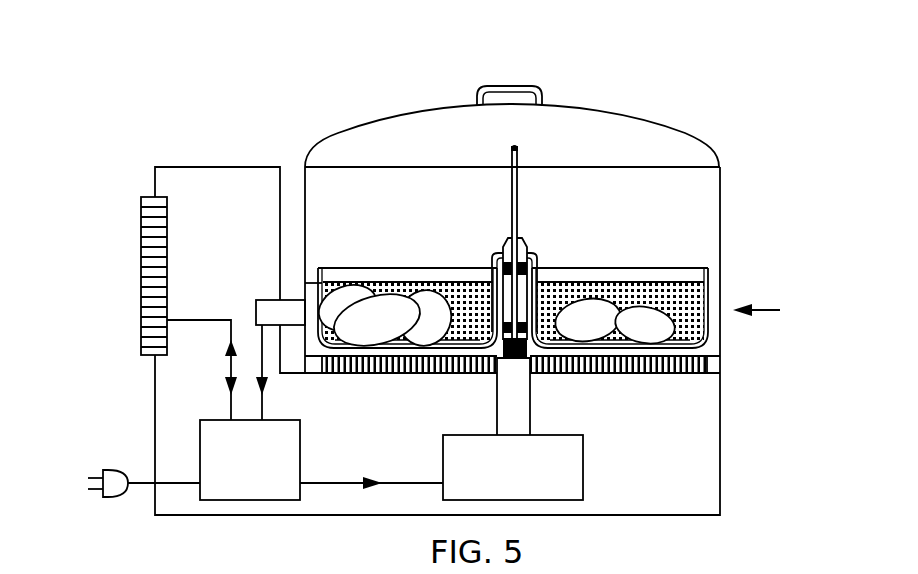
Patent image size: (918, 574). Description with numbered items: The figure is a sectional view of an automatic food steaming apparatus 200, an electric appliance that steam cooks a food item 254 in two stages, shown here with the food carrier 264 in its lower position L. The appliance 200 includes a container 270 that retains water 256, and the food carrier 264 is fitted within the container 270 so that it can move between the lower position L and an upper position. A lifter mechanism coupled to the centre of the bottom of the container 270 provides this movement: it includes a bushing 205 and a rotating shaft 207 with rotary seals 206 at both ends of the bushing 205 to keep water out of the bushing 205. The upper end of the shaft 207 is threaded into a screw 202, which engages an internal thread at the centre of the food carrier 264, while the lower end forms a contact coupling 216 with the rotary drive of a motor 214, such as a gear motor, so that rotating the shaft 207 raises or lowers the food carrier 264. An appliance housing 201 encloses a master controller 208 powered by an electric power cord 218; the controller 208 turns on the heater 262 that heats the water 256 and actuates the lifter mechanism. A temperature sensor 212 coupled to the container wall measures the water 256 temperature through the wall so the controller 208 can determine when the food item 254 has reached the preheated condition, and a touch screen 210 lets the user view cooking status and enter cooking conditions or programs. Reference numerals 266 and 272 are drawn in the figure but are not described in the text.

The automatic food steaming apparatus 200 is at (592, 79).
The appliance housing 201 is at (722, 462).
The screw 202 is at (520, 213).
The bushing 205 is at (466, 288).
The rotary seals 206 is at (500, 257).
The rotating shaft 207 is at (520, 172).
The master controller 208 is at (285, 473).
The touch screen 210 is at (140, 283).
The temperature sensor 212 is at (276, 312).
The motor 214 is at (540, 477).
The contact coupling 216 is at (503, 352).
The electric power cord 218 is at (143, 487).
The food item 254 is at (591, 316).
The water 256 is at (712, 296).
The heater 262 is at (708, 364).
The food carrier 264 is at (706, 276).
The perforated bottom 266 is at (705, 328).
The container 270 is at (722, 205).
The lid 272 is at (645, 111).
The lower position L is at (767, 310).